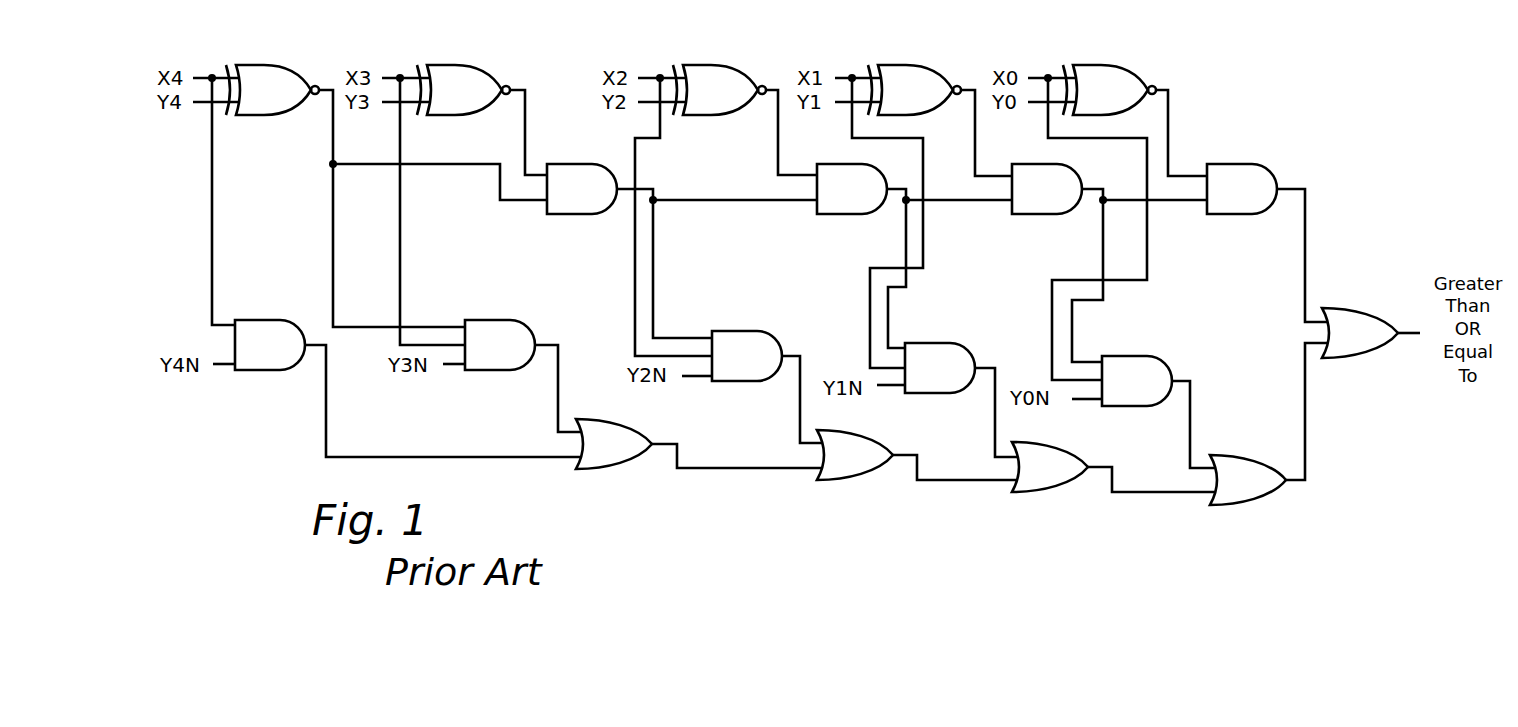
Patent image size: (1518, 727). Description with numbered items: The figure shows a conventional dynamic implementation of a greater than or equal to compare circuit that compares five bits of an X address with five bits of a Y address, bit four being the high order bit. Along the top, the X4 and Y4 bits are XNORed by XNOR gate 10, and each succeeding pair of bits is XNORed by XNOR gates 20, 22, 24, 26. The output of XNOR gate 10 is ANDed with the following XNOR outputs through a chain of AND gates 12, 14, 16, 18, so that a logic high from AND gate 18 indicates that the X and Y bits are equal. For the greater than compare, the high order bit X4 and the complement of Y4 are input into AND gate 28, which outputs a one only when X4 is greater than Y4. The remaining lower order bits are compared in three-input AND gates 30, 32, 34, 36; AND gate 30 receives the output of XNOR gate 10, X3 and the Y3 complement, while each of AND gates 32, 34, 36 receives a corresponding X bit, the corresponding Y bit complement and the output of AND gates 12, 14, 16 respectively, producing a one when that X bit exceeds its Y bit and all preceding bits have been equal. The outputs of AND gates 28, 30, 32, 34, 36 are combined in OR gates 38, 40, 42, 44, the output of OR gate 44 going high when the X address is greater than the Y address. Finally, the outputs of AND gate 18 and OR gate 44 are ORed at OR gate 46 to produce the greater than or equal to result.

The XNOR gate 10 is at (265, 65).
The XNOR gate 20 is at (455, 65).
The XNOR gate 22 is at (711, 65).
The XNOR gate 24 is at (905, 65).
The XNOR gate 26 is at (1100, 65).
The AND gate 12 is at (577, 214).
The AND gate 14 is at (844, 214).
The AND gate 16 is at (1039, 214).
The AND gate 18 is at (1234, 214).
The AND gate 28 is at (259, 370).
The AND gate 30 is at (492, 370).
The AND gate 32 is at (737, 381).
The AND gate 34 is at (932, 393).
The AND gate 36 is at (1127, 406).
The OR gate 38 is at (602, 469).
The OR gate 40 is at (844, 480).
The OR gate 42 is at (1039, 492).
The OR gate 44 is at (1236, 505).
The OR gate 46 is at (1349, 358).